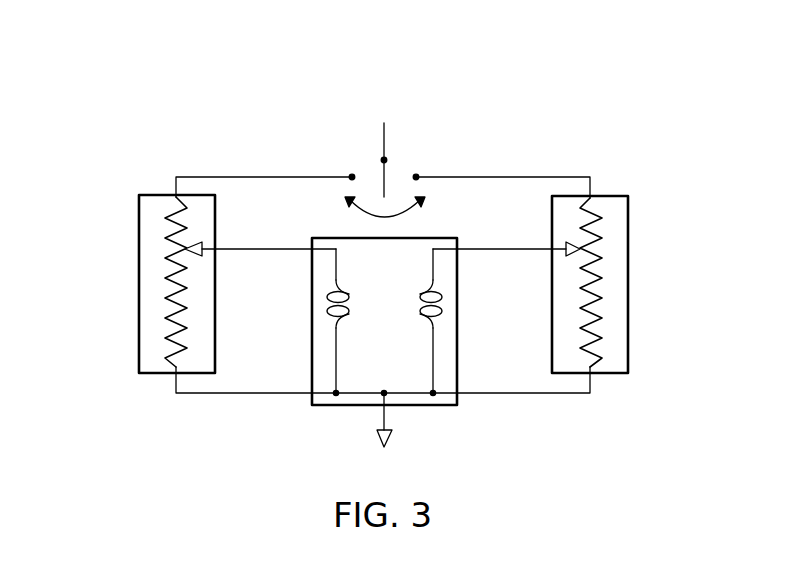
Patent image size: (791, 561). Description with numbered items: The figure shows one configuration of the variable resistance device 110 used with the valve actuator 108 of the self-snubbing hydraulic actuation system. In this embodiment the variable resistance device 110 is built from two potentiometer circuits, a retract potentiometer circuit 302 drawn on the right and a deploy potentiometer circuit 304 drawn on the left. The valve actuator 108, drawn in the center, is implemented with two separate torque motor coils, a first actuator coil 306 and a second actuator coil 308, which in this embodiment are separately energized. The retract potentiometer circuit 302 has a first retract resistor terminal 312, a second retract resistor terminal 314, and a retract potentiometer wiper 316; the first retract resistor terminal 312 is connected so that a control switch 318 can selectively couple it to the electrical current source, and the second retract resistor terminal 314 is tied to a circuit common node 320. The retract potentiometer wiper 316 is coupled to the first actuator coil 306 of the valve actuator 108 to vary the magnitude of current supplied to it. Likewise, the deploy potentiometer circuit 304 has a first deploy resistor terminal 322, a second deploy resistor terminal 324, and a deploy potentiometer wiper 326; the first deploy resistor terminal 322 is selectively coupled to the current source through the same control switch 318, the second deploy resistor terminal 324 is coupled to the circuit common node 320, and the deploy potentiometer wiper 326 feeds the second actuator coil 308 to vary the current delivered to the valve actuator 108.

The variable resistance device 110 is at (146, 73).
The control switch 318 is at (410, 136).
The valve actuator 108 is at (446, 238).
The retract potentiometer circuit 302 is at (628, 290).
The deploy potentiometer circuit 304 is at (139, 290).
The first actuator coil 306 is at (419, 314).
The second actuator coil 308 is at (348, 295).
The first retract resistor terminal 312 is at (590, 197).
The second retract resistor terminal 314 is at (590, 374).
The retract potentiometer wiper 316 is at (556, 248).
The circuit common node 320 is at (389, 440).
The first deploy resistor terminal 322 is at (176, 196).
The second deploy resistor terminal 324 is at (176, 374).
The deploy potentiometer wiper 326 is at (220, 248).